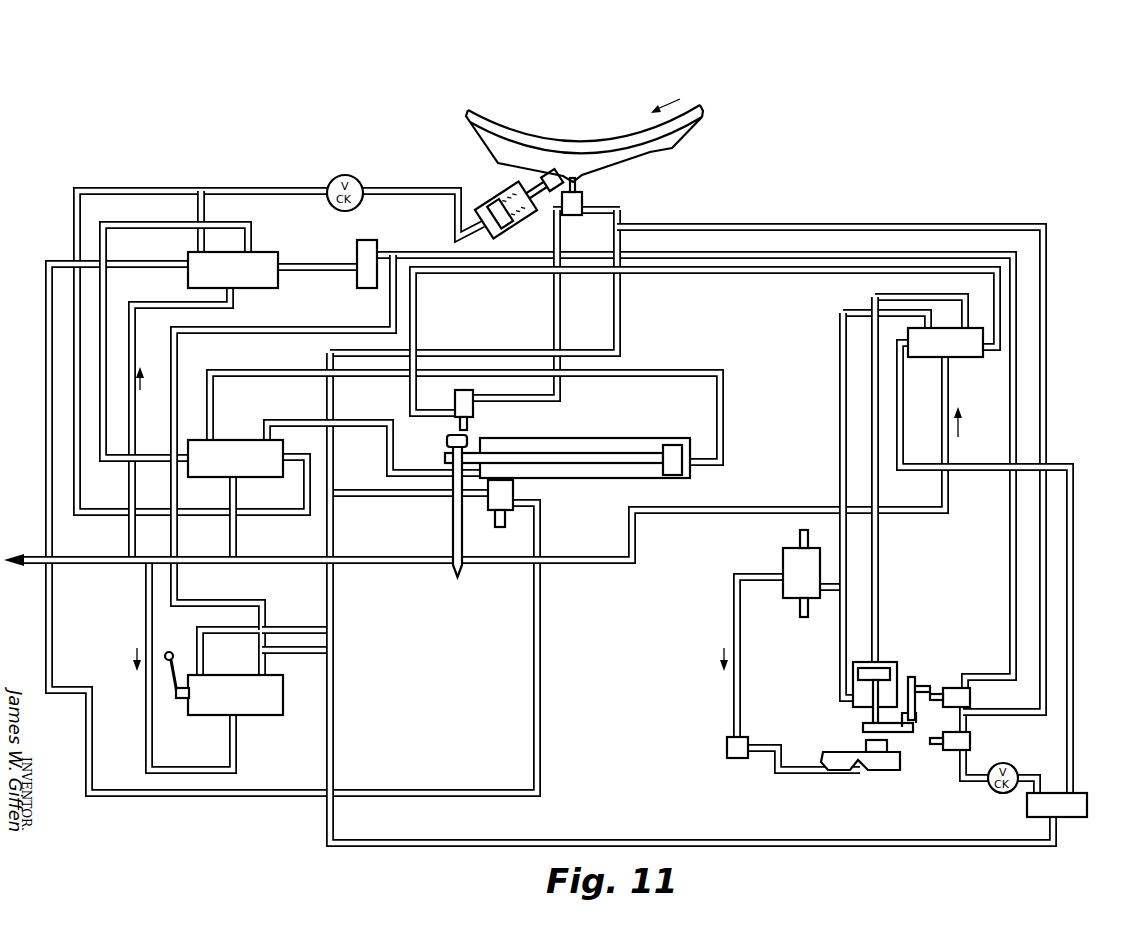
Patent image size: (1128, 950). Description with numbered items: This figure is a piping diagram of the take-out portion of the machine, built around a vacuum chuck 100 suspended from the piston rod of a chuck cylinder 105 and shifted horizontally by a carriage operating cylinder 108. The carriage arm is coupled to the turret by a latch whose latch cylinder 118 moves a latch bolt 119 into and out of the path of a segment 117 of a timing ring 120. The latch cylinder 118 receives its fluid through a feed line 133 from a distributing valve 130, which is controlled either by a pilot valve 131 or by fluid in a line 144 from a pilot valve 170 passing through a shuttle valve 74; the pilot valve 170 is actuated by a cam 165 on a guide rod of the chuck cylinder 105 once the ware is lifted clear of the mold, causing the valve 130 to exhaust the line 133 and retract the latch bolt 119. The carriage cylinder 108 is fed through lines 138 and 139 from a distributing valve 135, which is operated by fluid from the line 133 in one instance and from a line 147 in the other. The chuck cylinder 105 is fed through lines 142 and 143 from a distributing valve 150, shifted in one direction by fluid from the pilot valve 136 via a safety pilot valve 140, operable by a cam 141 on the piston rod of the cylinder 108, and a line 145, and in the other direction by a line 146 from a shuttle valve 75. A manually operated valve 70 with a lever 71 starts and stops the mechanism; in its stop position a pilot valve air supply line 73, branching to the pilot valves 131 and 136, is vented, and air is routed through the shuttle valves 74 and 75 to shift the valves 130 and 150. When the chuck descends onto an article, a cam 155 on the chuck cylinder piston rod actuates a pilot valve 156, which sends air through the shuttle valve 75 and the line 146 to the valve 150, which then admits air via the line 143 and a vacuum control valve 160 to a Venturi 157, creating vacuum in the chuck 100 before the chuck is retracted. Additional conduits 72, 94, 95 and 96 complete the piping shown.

The valve 70 is at (262, 718).
The lever 71 is at (185, 654).
The air supply line 72 is at (105, 556).
The pilot valve air supply line 73 is at (310, 627).
The shuttle valve 74 is at (367, 290).
The shuttle valve 75 is at (1027, 803).
The line 94 is at (266, 667).
The line 95 is at (178, 540).
The line 96 is at (335, 697).
The vacuum chuck 100 is at (838, 752).
The chuck cylinder 105 is at (890, 662).
The carriage operating cylinder 108 is at (604, 438).
The segment 117 is at (673, 149).
The latch cylinder 118 is at (482, 205).
The latch bolt 119 is at (548, 183).
The timing ring 120 is at (480, 113).
The distributing valve 130 is at (250, 290).
The pilot valve 131 is at (515, 494).
The feed line 133 is at (207, 208).
The distributing valve 135 is at (250, 438).
The pilot valve 136 is at (585, 198).
The line 138 is at (293, 377).
The line 139 is at (382, 419).
The safety pilot valve 140 is at (455, 402).
The cam 141 is at (447, 441).
The line 142 is at (880, 553).
The line 143 is at (839, 388).
The line 144 is at (905, 206).
The line 145 is at (770, 274).
The line 146 is at (1074, 590).
The line 147 is at (107, 285).
The distributing valve 150 is at (985, 360).
The cam 155 is at (928, 732).
The pilot valve 156 is at (972, 742).
The Venturi 157 is at (727, 748).
The vacuum control valve 160 is at (780, 565).
The cam 165 is at (920, 682).
The pilot valve 170 is at (972, 698).